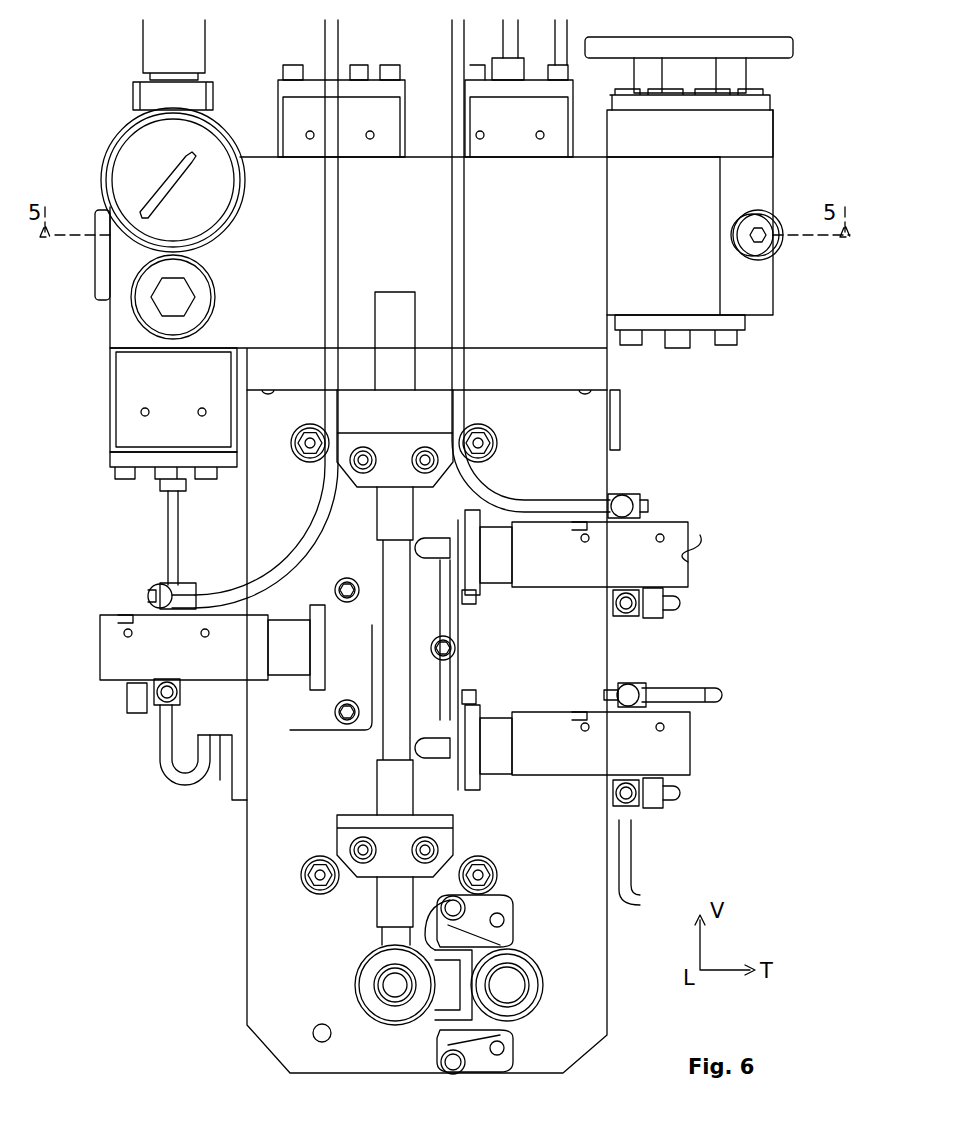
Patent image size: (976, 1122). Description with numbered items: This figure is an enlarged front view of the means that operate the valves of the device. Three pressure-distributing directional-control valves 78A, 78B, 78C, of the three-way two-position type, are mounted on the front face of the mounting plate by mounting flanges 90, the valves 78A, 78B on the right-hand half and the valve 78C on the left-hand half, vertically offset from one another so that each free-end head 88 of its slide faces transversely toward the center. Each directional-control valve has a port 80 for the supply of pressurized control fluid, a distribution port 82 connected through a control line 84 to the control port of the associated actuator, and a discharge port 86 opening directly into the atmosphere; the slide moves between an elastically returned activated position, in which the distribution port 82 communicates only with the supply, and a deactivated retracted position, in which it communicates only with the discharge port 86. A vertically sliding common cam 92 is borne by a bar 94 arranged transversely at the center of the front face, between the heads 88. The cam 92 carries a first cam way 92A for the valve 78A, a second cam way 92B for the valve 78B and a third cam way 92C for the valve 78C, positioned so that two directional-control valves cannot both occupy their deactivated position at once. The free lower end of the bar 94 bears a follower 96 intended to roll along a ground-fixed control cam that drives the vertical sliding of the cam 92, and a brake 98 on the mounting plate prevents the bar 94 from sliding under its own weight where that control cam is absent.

The pressure-distributing directional-control valve 78A is at (641, 743).
The pressure-distributing directional-control valve 78B is at (705, 552).
The pressure-distributing directional-control valve 78C is at (110, 615).
The port for the supply of control fluid 80 is at (162, 712).
The distribution port 82 is at (150, 585).
The control line 84 is at (328, 532).
The discharge port 86 is at (127, 695).
The free-end head of the slide 88 is at (350, 578).
The mounting flanges 90 is at (300, 680).
The common cam 92 is at (455, 620).
The first cam way 92A is at (470, 700).
The second cam way 92B is at (470, 598).
The third cam way 92C is at (345, 725).
The bar 94 is at (378, 755).
The follower 96 is at (360, 972).
The brake 98 is at (440, 410).